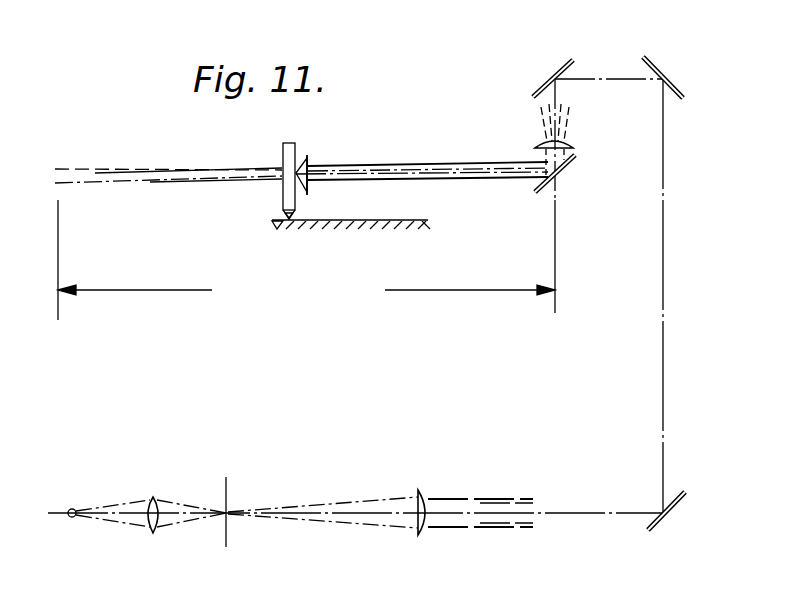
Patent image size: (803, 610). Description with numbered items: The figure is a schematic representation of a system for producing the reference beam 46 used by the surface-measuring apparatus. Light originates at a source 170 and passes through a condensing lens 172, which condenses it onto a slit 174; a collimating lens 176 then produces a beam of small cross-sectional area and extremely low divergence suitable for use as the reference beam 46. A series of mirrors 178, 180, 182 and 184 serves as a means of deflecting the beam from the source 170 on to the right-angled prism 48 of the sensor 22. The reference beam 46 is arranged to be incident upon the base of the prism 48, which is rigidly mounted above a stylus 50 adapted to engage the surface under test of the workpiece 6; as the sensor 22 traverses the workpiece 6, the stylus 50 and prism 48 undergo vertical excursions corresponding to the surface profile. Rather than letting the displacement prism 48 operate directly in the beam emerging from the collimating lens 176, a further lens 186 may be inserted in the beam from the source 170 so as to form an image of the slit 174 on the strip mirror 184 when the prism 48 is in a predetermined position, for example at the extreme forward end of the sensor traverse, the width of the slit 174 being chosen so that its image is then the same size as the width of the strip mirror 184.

The workpiece 6 is at (403, 218).
The sensor 22 is at (276, 153).
The reference beam 46 is at (382, 165).
The right-angled prism 48 is at (330, 148).
The stylus 50 is at (286, 214).
The source 170 is at (63, 512).
The condensing lens 172 is at (153, 495).
The slit 174 is at (228, 490).
The collimating lens 176 is at (425, 500).
The mirror 178 is at (650, 522).
The mirror 180 is at (665, 40).
The mirror 182 is at (556, 68).
The strip mirror 184 is at (573, 168).
The further lens 186 is at (570, 143).